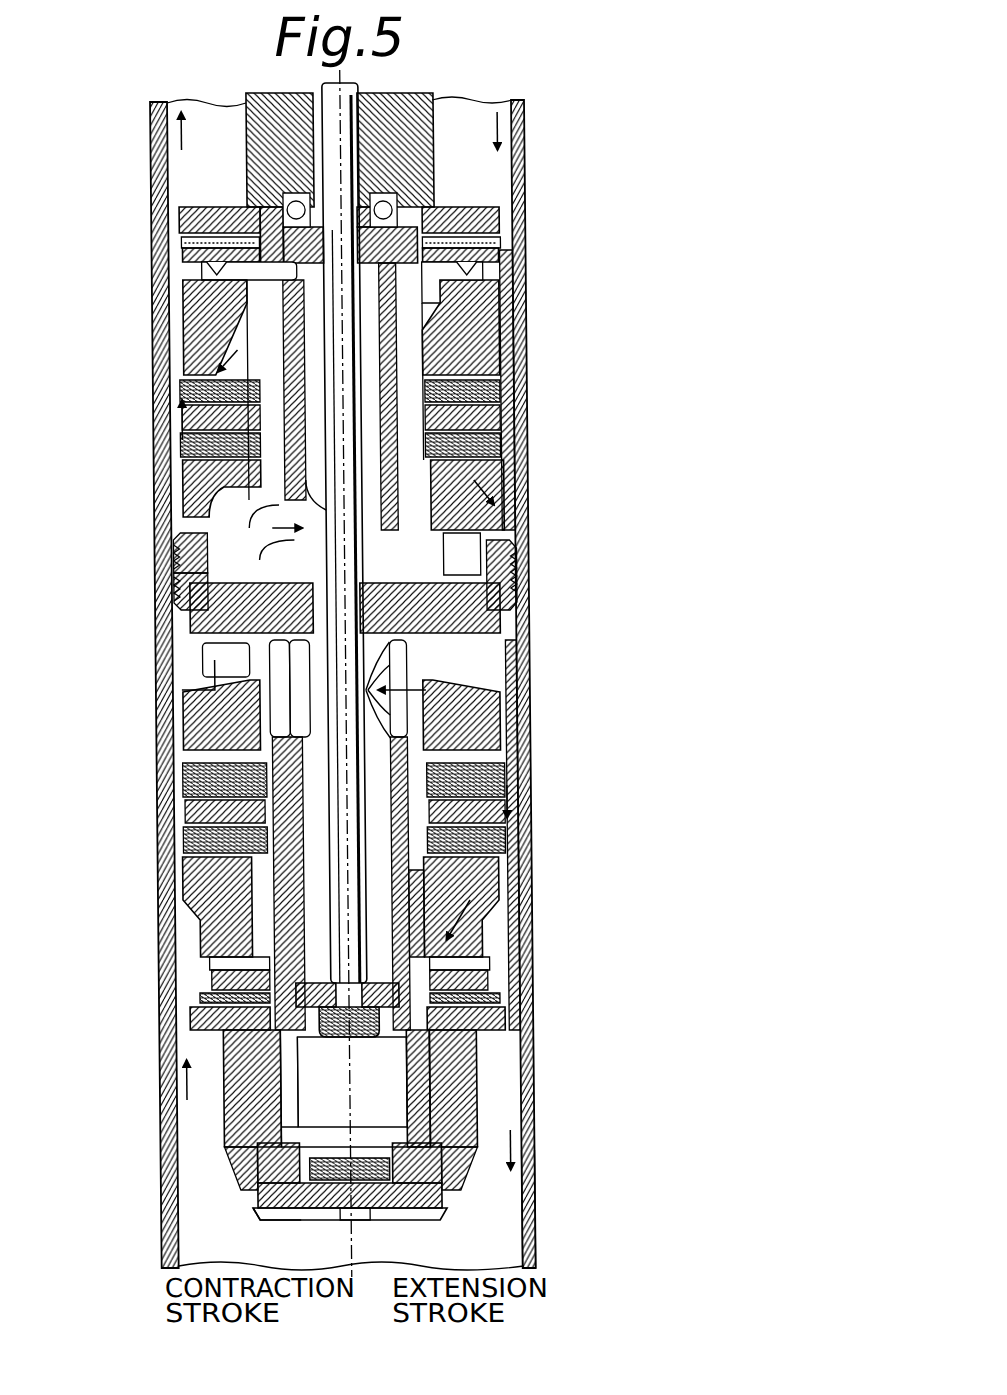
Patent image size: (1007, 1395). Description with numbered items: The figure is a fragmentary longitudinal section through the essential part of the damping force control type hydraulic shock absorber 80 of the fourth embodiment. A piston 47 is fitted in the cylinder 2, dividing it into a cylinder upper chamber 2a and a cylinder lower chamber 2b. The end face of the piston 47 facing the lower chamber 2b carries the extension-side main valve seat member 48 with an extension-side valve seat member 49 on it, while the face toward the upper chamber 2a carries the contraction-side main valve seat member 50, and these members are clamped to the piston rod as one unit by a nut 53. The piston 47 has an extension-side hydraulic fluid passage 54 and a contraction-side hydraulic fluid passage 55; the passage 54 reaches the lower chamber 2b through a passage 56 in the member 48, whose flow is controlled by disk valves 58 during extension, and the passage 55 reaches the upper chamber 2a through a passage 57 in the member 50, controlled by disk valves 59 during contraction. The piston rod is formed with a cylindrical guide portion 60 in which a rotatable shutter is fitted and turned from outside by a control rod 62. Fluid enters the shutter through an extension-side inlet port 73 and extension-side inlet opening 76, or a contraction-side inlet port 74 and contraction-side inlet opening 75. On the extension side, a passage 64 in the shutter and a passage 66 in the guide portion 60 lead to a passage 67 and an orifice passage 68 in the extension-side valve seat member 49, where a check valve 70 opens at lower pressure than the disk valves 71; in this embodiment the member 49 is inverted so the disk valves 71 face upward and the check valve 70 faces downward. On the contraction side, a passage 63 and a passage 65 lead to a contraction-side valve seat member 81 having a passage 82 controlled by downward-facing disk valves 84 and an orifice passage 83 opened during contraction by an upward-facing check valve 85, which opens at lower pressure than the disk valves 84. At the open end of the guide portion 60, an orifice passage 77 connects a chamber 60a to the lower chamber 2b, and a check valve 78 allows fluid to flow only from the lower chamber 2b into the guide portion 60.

The damping force control type hydraulic shock absorber 80 is at (568, 125).
The cylinder 2 is at (520, 103).
The cylinder upper chamber 2a is at (462, 120).
The cylinder lower chamber 2b is at (525, 1222).
The control rod 62 is at (352, 96).
The check valve 85 is at (505, 225).
The orifice passage 83 is at (505, 246).
The contraction-side valve seat member 81 is at (505, 290).
The passage 63 is at (245, 325).
The passage 82 is at (505, 332).
The passage 65 is at (240, 378).
The disk valves 84 is at (505, 385).
The disk valves 59 is at (232, 440).
The passage 57 is at (215, 515).
The contraction-side main valve seat member 50 is at (505, 465).
The extension-side hydraulic fluid passage 54 is at (505, 520).
The contraction-side inlet opening 75 is at (190, 560).
The contraction-side inlet port 74 is at (186, 605).
The piston 47 is at (505, 582).
The extension-side inlet port 73 is at (505, 632).
The contraction-side hydraulic fluid passage 55 is at (210, 668).
The extension-side inlet opening 76 is at (420, 690).
The passage 56 is at (505, 740).
The extension-side main valve seat member 48 is at (505, 752).
The disk valves 58 is at (505, 780).
The disk valves 71 is at (505, 835).
The passage 66 is at (210, 900).
The extension-side valve seat member 49 is at (500, 910).
The passage 67 is at (475, 870).
The passage 64 is at (232, 968).
The orifice passage 68 is at (500, 955).
The check valve 70 is at (500, 1005).
The guide portion 60 is at (240, 1095).
The chamber 60a is at (386, 1085).
The check valve 78 is at (431, 1170).
The orifice passage 77 is at (354, 1222).
The nut 53 is at (252, 1205).